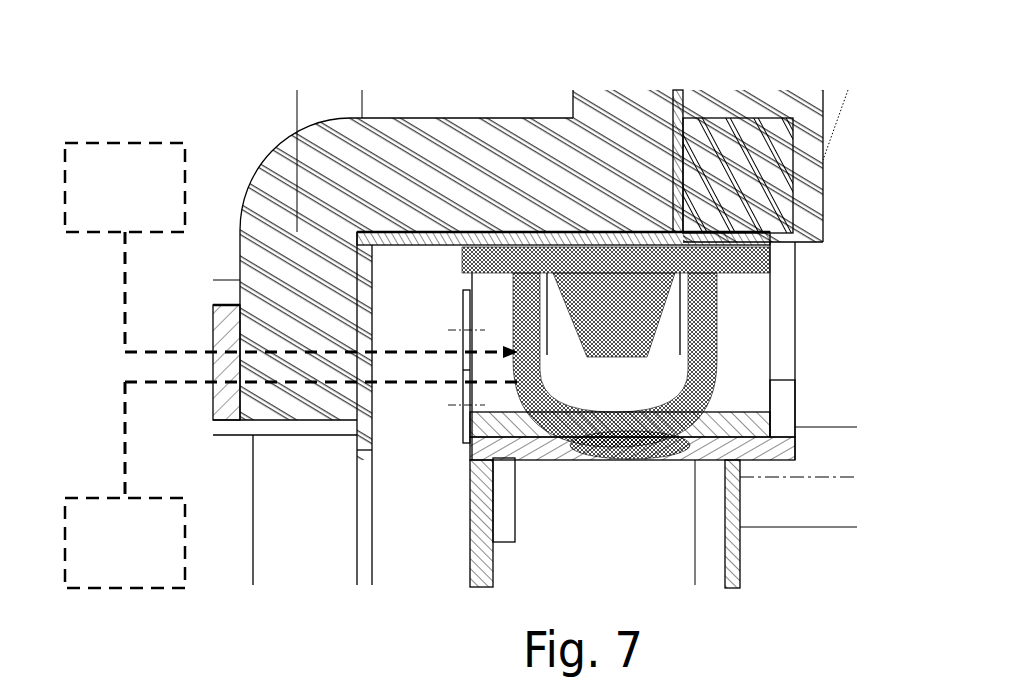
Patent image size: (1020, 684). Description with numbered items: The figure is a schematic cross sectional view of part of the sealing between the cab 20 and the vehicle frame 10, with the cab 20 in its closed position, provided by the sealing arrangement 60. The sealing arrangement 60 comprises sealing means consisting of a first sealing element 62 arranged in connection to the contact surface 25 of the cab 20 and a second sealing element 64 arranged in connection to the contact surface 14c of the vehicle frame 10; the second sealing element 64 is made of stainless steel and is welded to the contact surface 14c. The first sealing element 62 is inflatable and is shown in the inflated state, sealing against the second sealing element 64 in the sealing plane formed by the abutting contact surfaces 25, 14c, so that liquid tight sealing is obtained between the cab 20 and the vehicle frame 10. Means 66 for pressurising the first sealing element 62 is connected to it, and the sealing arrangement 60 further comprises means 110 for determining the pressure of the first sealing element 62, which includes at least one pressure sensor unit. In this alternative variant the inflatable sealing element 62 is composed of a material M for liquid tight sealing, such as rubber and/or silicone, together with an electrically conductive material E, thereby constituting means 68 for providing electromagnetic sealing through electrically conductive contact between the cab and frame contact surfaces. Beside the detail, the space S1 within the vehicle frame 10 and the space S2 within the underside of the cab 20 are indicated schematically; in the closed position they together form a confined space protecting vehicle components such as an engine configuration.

The cab 20 is at (410, 118).
The contact surface of the cab 25 is at (677, 243).
The first sealing element 62 is at (710, 372).
The second sealing element 64 is at (718, 407).
The contact surface of the vehicle frame 14c is at (735, 437).
The means for providing electromagnetic sealing 68 is at (663, 440).
The vehicle frame 10 is at (468, 535).
The sealing arrangement 60 is at (178, 243).
The means for pressurising the first sealing element 66 is at (110, 204).
The means for determining the pressure 110 is at (104, 559).
The material for liquid tight sealing M is at (522, 320).
The electrically conductive material E is at (540, 392).
The space within the vehicle frame S1 is at (830, 502).
The space within the underside of the cab S2 is at (922, 242).